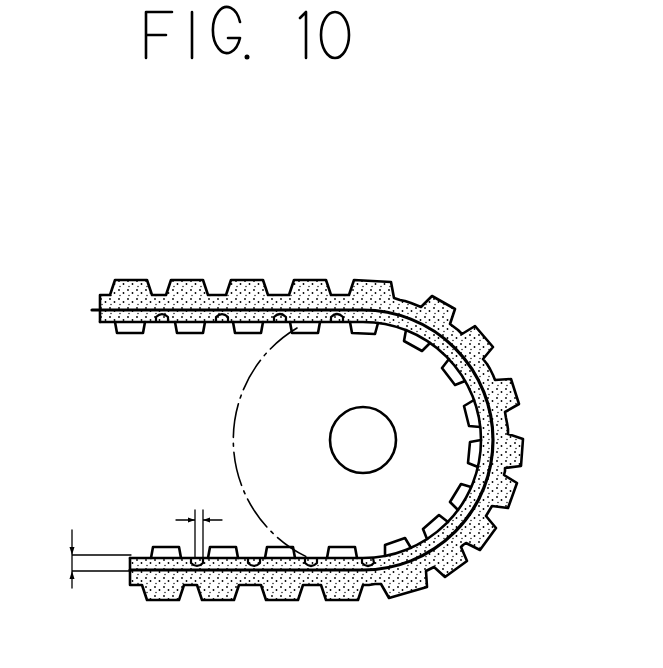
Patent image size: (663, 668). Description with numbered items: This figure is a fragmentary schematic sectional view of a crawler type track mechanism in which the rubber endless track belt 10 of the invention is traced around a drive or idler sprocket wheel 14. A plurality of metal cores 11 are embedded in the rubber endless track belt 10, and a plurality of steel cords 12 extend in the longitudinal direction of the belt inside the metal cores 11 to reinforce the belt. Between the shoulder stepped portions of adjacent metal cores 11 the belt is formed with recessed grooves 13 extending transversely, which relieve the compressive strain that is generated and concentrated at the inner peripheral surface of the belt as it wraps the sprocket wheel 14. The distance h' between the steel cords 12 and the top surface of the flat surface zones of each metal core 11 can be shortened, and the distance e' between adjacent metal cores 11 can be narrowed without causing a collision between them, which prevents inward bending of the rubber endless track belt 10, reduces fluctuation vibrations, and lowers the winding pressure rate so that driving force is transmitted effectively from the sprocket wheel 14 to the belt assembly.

The rubber endless track belt 10 is at (178, 279).
The metal core 11 is at (172, 323).
The steel cords 12 is at (225, 576).
The recessed grooves 13 is at (203, 552).
The drive or idler sprocket wheel 14 is at (280, 433).
The distance between adjacent metal cores e' is at (199, 521).
The distance between steel cords and top surface of flat surface zone h' is at (89, 559).